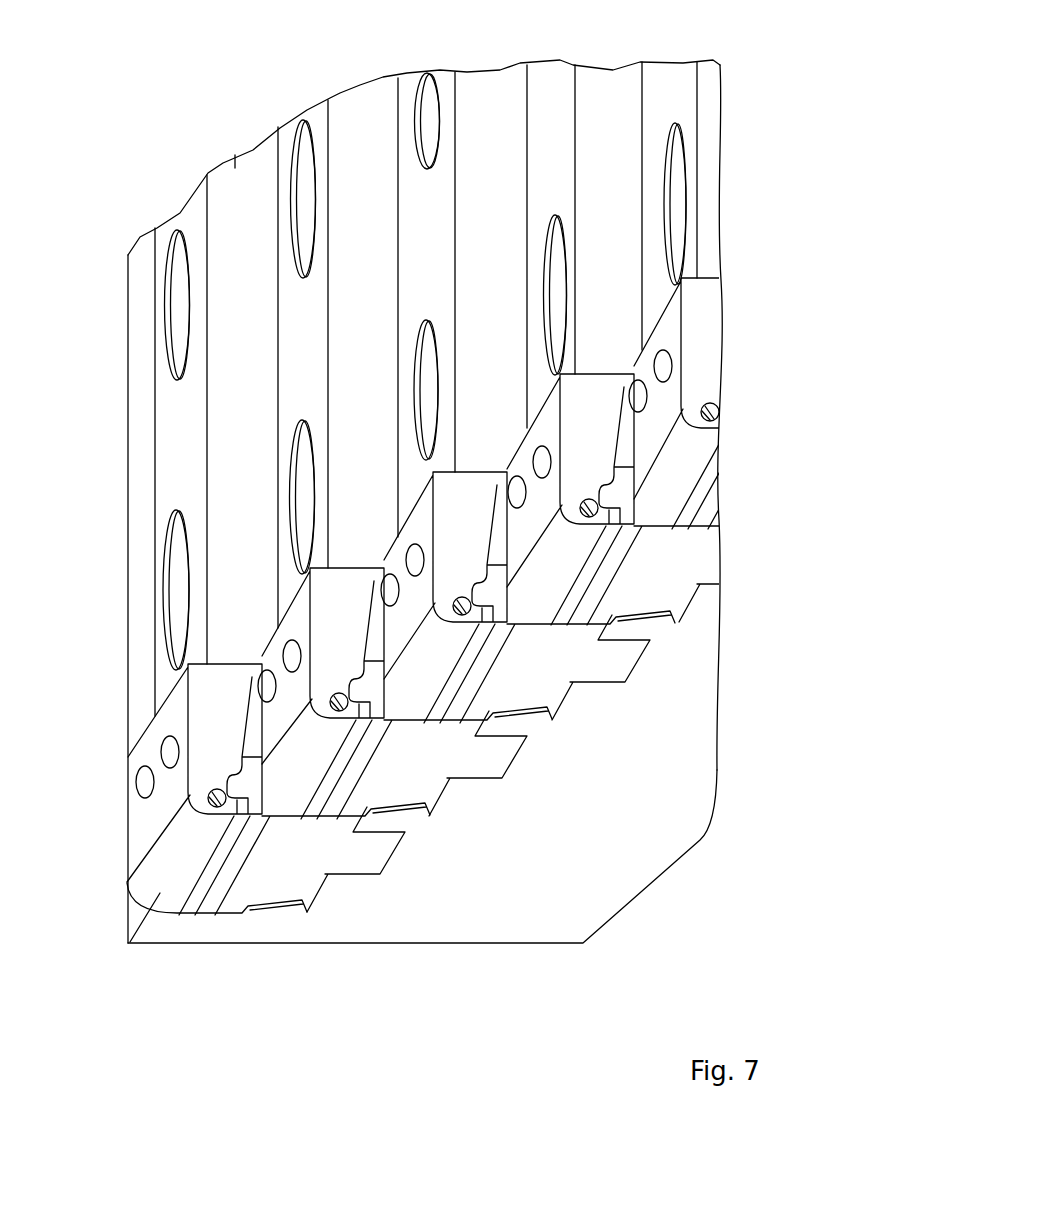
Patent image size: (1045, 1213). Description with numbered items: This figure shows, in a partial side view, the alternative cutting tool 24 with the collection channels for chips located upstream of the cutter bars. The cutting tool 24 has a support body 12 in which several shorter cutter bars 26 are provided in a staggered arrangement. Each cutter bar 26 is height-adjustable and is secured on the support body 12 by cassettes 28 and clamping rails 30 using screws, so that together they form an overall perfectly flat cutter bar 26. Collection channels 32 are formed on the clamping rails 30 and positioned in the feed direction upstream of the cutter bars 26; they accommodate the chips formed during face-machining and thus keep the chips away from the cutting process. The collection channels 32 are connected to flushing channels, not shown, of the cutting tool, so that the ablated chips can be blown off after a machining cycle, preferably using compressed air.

The support body 12 is at (558, 902).
The cutting tool 24 is at (103, 450).
The cutter bars 26 is at (713, 477).
The cassettes 28 is at (237, 157).
The clamping rails 30 is at (712, 333).
The collection channels 32 is at (722, 414).